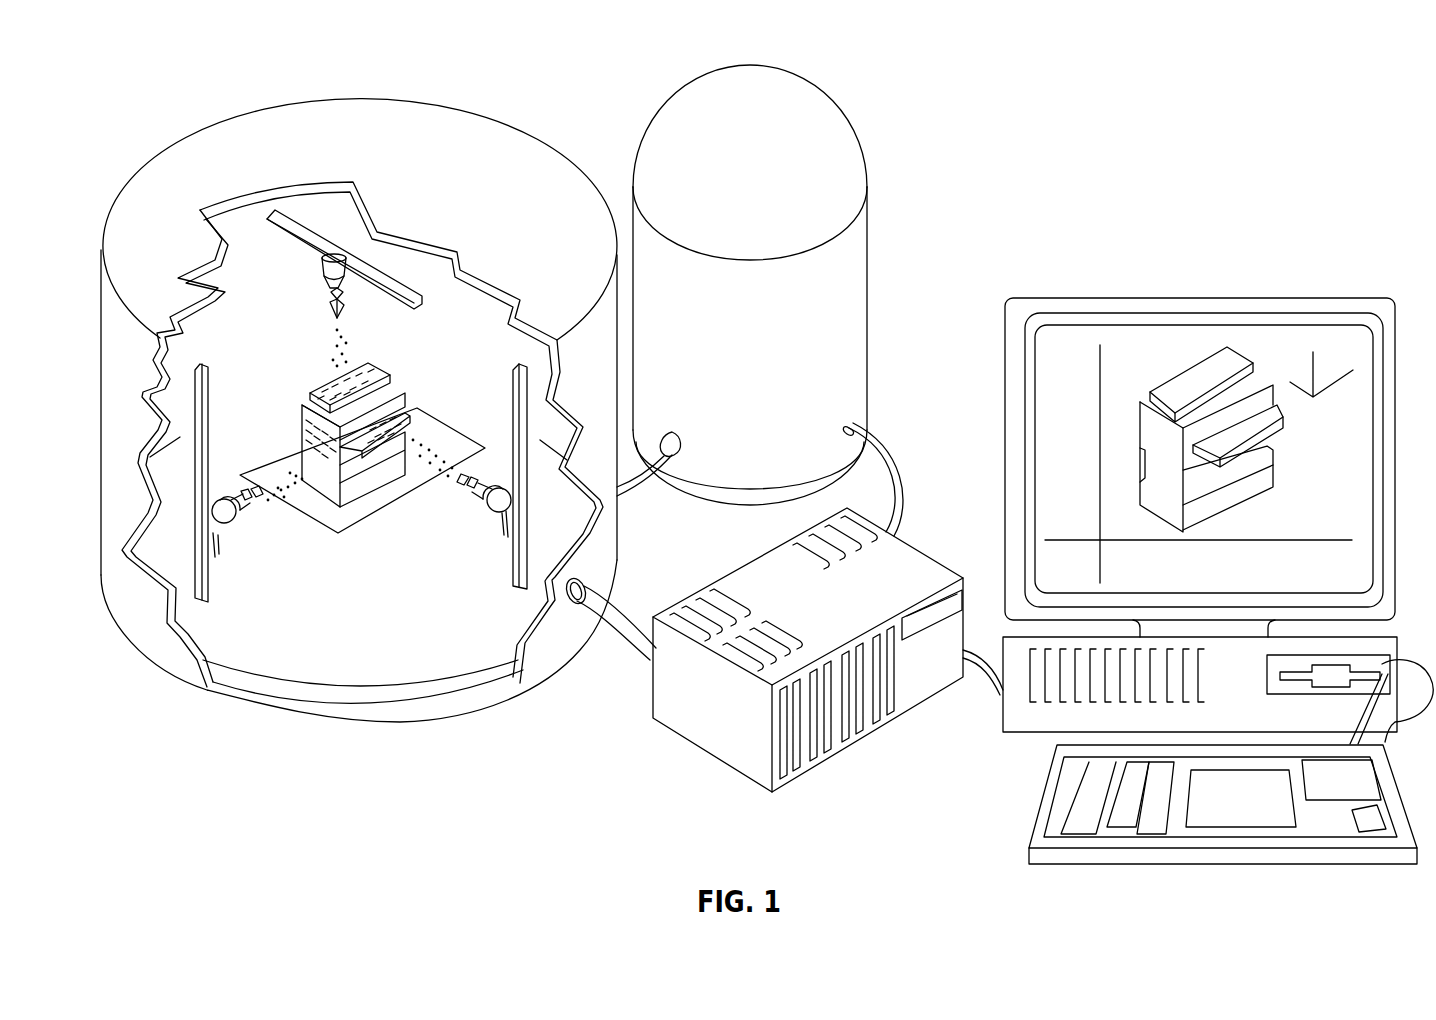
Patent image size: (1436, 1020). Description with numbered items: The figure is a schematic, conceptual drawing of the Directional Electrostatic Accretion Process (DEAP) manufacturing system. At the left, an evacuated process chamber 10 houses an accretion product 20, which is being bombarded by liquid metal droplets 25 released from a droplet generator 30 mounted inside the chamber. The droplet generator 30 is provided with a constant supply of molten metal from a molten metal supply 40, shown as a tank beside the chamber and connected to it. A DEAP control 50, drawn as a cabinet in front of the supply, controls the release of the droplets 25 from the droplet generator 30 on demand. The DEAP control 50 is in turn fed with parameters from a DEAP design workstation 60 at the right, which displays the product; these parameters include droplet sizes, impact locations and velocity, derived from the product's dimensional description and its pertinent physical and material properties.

The evacuated process chamber 10 is at (200, 133).
The accretion product 20 is at (347, 488).
The liquid metal droplets 25 is at (330, 343).
The droplet generator 30 is at (320, 264).
The molten metal supply 40 is at (835, 122).
The DEAP control 50 is at (828, 762).
The DEAP design workstation 60 is at (1180, 292).